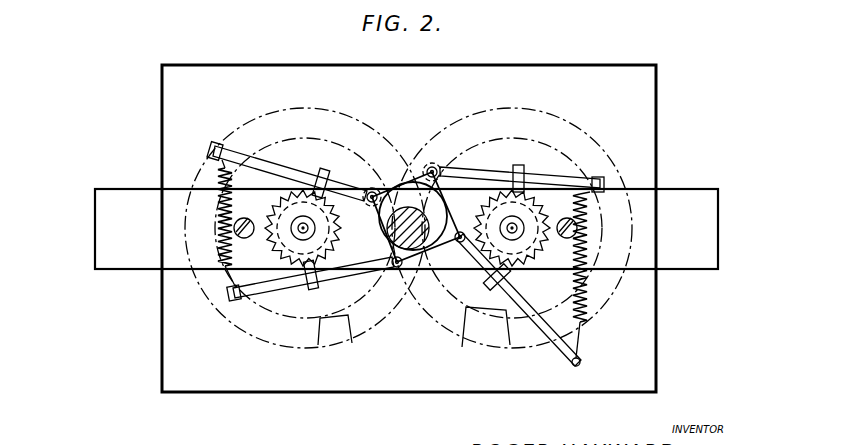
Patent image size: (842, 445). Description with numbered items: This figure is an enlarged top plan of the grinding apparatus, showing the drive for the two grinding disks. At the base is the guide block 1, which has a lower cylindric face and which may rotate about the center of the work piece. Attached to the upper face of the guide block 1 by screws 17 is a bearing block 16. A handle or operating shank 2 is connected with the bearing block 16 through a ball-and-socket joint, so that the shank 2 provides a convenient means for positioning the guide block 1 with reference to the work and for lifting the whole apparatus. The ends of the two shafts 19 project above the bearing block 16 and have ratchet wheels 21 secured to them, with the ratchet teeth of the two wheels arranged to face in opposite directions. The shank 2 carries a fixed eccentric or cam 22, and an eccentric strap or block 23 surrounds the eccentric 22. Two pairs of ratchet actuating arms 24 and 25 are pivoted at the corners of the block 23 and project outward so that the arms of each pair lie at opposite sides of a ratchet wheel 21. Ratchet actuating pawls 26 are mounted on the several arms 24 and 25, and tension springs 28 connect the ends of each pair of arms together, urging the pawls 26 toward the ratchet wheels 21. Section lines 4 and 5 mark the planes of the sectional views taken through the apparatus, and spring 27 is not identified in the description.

The guide block 1 is at (648, 168).
The operating shank 2 is at (412, 250).
The section line 4- 4 is at (82, 232).
The section line 5- 5 is at (305, 444).
The bearing block 16 is at (134, 268).
The screws 17 is at (252, 212).
The shafts 19 is at (303, 228).
The ratchet wheels 21 is at (279, 247).
The eccentric 22 is at (445, 167).
The eccentric strap 23 is at (368, 190).
The ratchet actuating arms 24 is at (287, 168).
The ratchet actuating arms 25 is at (568, 176).
The ratchet actuating pawls 26 is at (324, 170).
The left tension spring 27 is at (216, 220).
The tension springs 28 is at (590, 257).